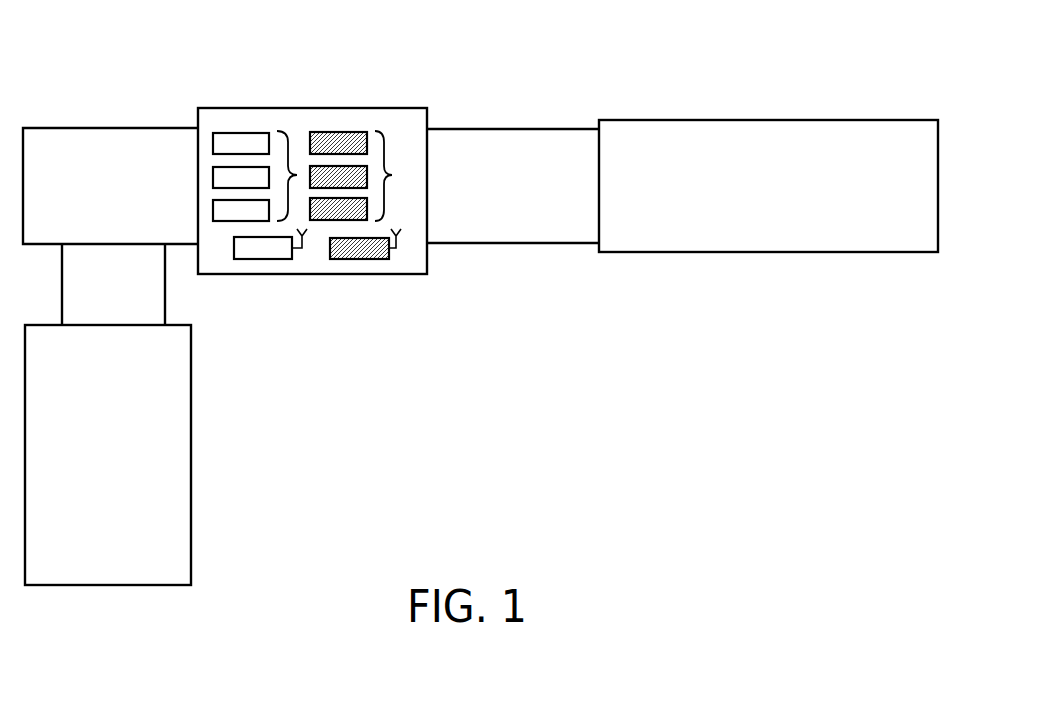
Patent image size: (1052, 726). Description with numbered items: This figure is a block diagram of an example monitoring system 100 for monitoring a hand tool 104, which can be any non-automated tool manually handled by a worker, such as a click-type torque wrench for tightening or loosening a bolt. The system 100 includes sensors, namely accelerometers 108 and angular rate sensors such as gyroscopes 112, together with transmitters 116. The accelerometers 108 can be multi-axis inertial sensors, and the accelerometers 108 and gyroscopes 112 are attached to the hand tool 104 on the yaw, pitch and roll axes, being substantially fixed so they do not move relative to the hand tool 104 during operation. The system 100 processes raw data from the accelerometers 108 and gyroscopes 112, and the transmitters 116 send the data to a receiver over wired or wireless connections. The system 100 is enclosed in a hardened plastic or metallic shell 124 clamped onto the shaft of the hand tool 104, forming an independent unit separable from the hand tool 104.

The monitoring system 100 is at (221, 107).
The hand tool 104 is at (572, 243).
The accelerometers 108 is at (297, 175).
The gyroscopes 112 is at (392, 175).
The transmitters 116 is at (277, 259).
The shell 124 is at (422, 275).